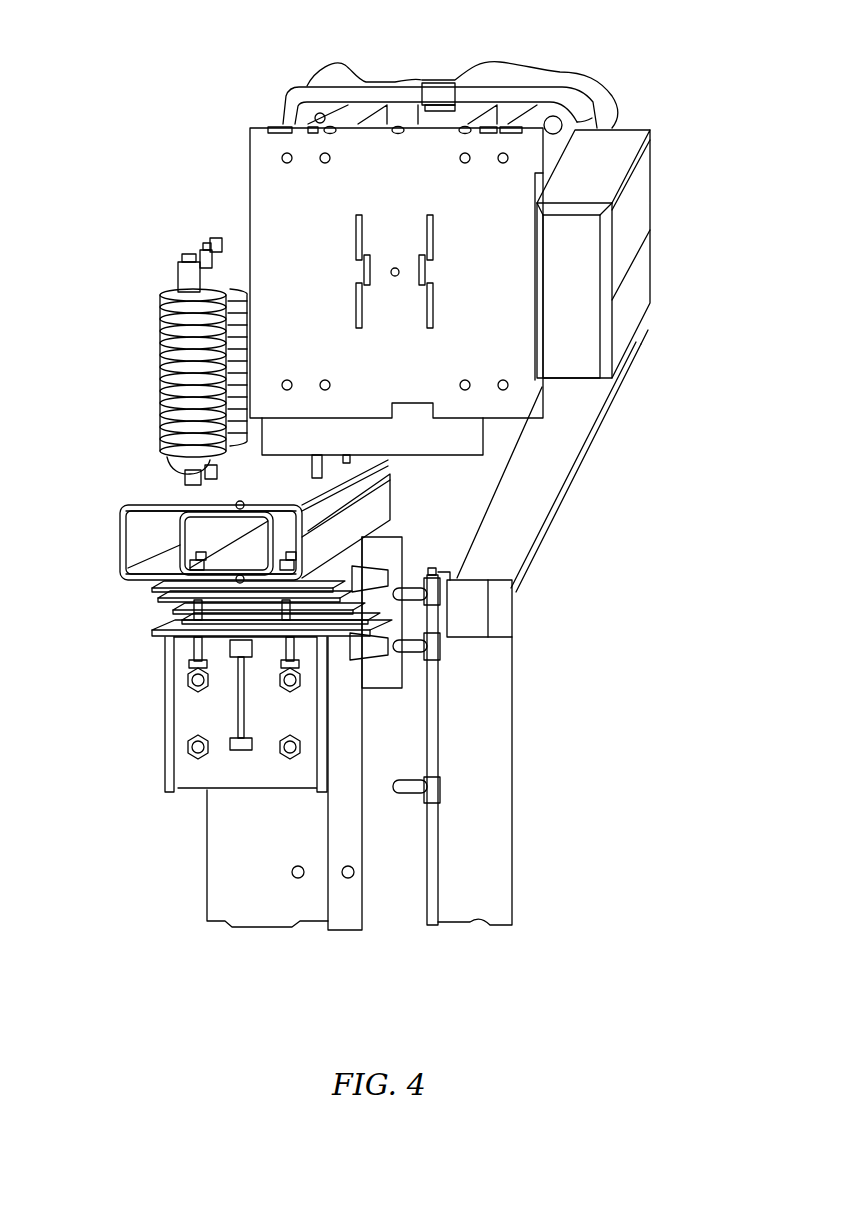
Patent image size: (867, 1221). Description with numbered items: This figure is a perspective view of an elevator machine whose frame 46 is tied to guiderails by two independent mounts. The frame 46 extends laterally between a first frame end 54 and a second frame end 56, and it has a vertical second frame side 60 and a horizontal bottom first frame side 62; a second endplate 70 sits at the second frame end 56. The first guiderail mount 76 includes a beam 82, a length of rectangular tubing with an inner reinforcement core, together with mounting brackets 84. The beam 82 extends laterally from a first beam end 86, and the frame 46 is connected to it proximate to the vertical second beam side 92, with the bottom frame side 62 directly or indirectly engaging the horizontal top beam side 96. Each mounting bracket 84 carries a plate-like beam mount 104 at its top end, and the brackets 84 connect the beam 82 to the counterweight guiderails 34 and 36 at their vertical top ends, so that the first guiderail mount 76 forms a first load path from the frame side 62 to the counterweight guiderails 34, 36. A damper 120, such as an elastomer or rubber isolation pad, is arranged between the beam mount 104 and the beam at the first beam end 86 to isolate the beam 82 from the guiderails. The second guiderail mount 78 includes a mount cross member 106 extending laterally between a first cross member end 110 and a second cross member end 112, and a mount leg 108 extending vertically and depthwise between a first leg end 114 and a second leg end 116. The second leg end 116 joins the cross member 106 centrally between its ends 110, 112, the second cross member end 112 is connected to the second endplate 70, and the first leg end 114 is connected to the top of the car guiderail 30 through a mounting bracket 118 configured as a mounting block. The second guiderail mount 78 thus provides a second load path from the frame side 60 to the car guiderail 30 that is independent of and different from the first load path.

The car guiderail 30 is at (512, 822).
The counterweight guiderail 34 is at (207, 882).
The counterweight guiderail 36 is at (346, 930).
The frame 46 is at (278, 84).
The first frame end 54 is at (258, 188).
The second frame end 56 is at (510, 72).
The second frame side 60 is at (263, 126).
The first frame side 62 is at (483, 458).
The second endplate 70 is at (600, 93).
The first guiderail mount 76 is at (116, 503).
The second guiderail mount 78 is at (655, 284).
The beam 82 is at (118, 516).
The mounting bracket 84 is at (408, 557).
The first beam end 86 is at (118, 560).
The second beam side 92 is at (378, 497).
The second beam side 96 is at (178, 473).
The beam mount 104 is at (148, 634).
The mount cross member 106 is at (632, 188).
The mount leg 108 is at (577, 477).
The first cross member end 110 is at (632, 230).
The second cross member end 112 is at (650, 148).
The first leg end 114 is at (510, 650).
The second leg end 116 is at (643, 349).
The mounting bracket 118 is at (468, 628).
The damper 120 is at (153, 592).